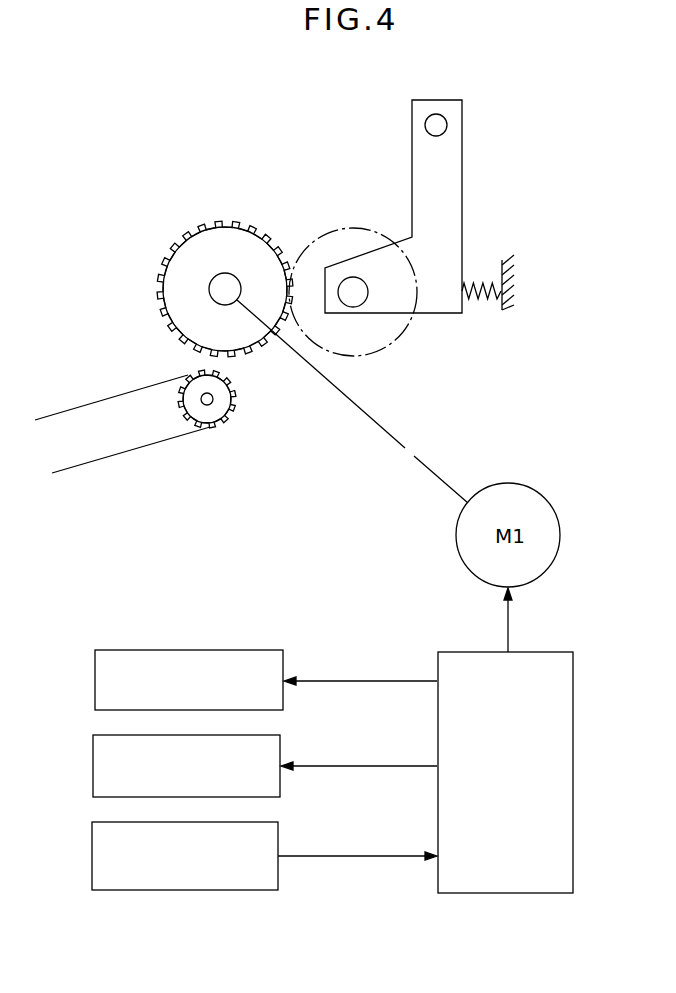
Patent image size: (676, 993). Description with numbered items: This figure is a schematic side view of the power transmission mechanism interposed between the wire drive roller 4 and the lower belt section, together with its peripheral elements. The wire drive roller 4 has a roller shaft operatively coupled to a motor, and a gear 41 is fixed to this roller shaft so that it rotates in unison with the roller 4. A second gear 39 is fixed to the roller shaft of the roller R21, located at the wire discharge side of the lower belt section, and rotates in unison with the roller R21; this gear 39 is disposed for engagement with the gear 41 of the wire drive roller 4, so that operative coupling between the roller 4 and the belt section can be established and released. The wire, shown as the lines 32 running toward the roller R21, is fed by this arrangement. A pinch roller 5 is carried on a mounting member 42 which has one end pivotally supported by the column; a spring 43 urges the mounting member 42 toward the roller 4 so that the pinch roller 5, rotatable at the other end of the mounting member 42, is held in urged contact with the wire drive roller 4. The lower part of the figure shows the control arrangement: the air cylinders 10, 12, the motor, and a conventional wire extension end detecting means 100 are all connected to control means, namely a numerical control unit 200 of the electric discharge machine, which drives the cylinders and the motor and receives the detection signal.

The wire drive roller 4 is at (183, 311).
The gear 41 is at (177, 240).
The mounting member 42 is at (448, 234).
The spring 43 is at (482, 303).
The pinch roller 5 is at (393, 340).
The gear 39 is at (230, 420).
The roller R21 is at (220, 399).
The wire 32 is at (150, 435).
The air cylinder 10 is at (215, 650).
The air cylinder 12 is at (281, 744).
The wire extension end detecting means 100 is at (209, 893).
The numerical control unit 200 is at (488, 895).